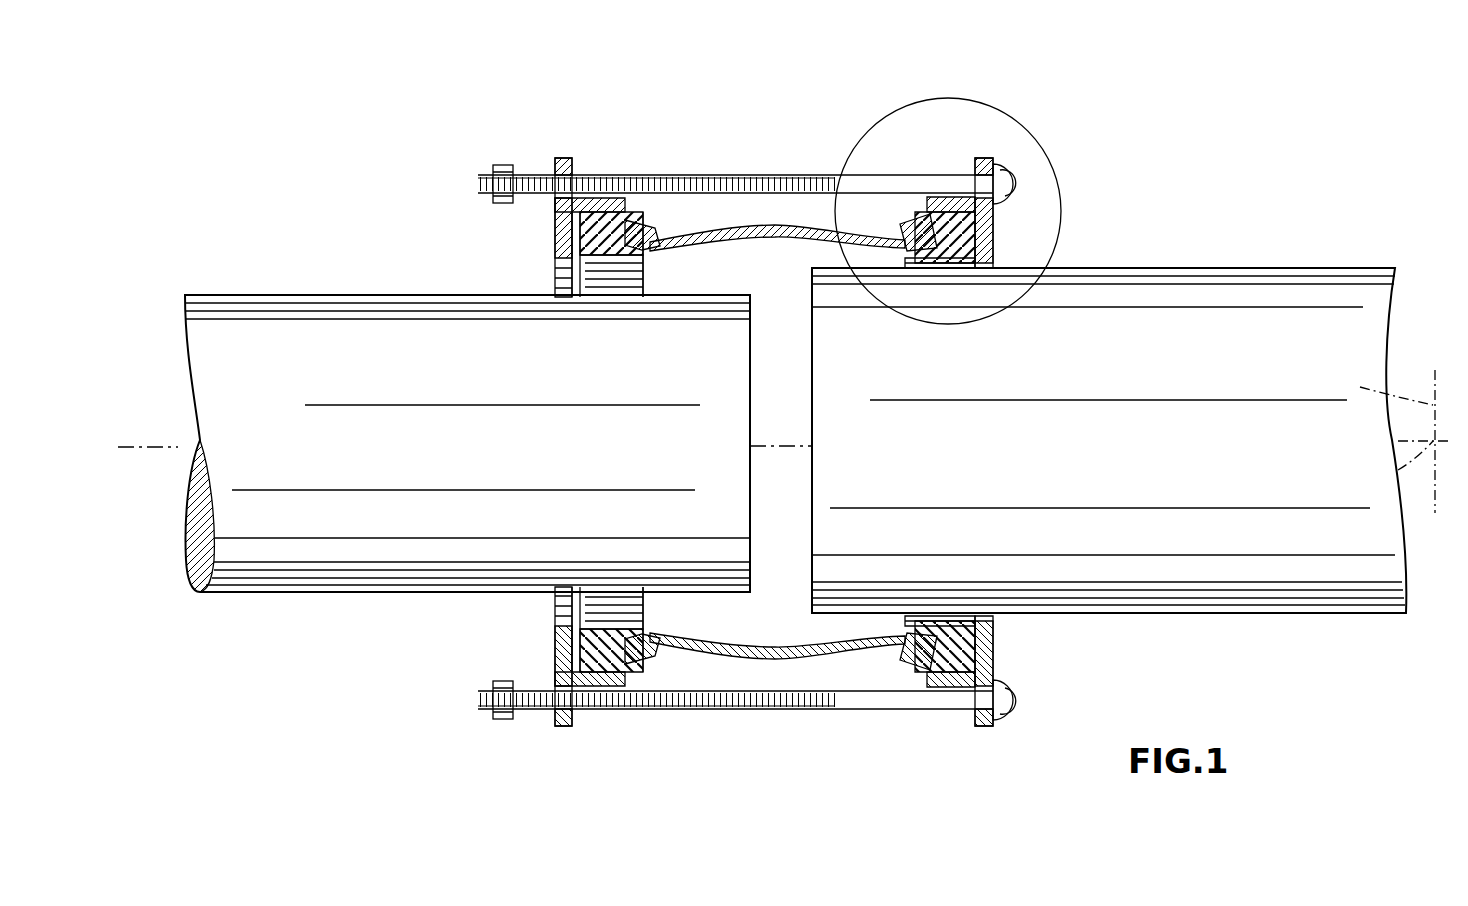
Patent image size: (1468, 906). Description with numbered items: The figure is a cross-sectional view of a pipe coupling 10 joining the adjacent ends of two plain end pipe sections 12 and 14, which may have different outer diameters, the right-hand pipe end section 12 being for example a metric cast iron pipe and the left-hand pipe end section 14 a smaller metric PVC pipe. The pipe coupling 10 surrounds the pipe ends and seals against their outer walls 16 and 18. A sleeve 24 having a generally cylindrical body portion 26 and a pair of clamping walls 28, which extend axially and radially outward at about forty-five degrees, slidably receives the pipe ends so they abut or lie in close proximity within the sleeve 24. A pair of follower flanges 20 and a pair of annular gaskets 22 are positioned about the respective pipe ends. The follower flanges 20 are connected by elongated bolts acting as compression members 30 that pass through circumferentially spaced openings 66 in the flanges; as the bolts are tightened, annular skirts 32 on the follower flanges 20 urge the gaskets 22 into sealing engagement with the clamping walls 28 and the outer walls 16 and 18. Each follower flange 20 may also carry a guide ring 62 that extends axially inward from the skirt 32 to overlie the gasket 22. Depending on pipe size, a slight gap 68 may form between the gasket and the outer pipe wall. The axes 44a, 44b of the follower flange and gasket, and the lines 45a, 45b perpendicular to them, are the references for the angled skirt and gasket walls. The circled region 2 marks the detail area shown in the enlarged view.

The pipe coupling 10 is at (828, 63).
The detail view area of FIG. 2 is at (1032, 128).
The pipe end section 12 is at (1190, 270).
The pipe end section 14 is at (318, 297).
The outer wall 16 is at (1278, 344).
The outer wall 18 is at (416, 362).
The follower flange 20 is at (563, 163).
The annular gasket 22 is at (600, 230).
The sleeve 24 is at (760, 226).
The cylindrical body portion 26 is at (736, 248).
The clamping wall 28 is at (642, 232).
The compression member 30 is at (646, 178).
The annular skirt 32 is at (554, 213).
The axis 44a is at (1368, 462).
The axis 44b is at (1368, 462).
The line perpendicular to the axis 45a is at (1353, 440).
The line perpendicular to the axis 45b is at (1353, 440).
The guide ring 62 is at (933, 204).
The opening 66 is at (578, 170).
The gap 68 is at (932, 270).